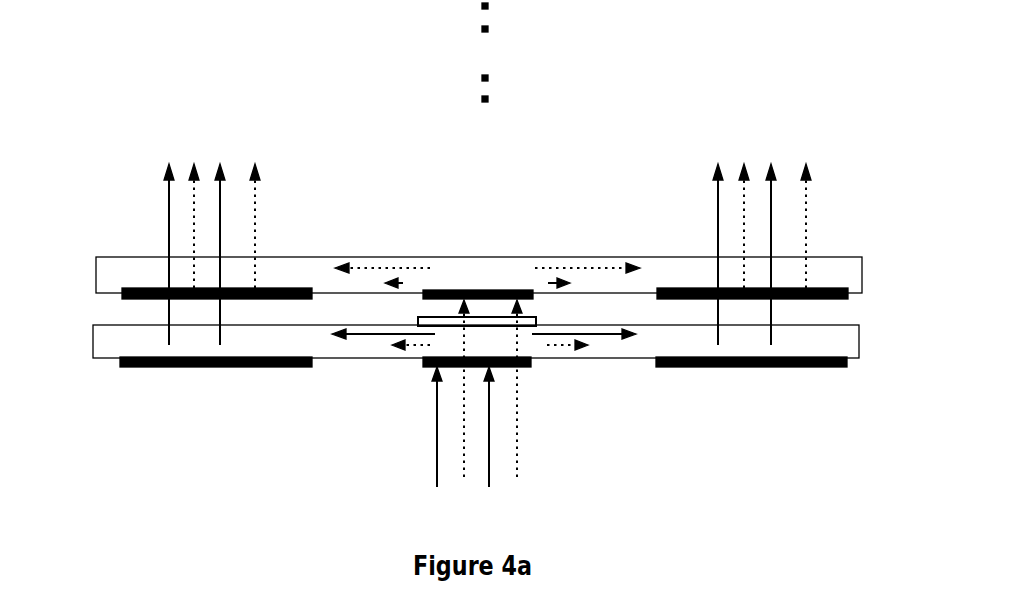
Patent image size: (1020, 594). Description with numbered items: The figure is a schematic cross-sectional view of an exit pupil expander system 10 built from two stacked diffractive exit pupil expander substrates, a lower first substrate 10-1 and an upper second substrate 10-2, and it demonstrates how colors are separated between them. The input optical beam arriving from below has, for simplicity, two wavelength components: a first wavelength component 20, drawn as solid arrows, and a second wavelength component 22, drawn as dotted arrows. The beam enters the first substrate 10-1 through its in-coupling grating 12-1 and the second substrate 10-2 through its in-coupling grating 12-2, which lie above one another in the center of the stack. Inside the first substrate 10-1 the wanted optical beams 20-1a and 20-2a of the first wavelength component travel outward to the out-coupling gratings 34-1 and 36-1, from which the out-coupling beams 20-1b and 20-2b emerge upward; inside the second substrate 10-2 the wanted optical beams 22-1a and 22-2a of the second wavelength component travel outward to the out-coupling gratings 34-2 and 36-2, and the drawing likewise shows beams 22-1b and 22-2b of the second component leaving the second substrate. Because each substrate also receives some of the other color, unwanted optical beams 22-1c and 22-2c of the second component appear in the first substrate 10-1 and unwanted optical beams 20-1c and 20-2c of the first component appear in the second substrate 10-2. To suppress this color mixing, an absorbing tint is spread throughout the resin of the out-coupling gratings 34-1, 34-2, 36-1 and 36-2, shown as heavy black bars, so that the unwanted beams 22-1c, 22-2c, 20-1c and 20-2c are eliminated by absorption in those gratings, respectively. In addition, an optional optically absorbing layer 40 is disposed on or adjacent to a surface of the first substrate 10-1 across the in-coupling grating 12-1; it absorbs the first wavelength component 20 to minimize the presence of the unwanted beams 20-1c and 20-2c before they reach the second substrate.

The exit pupil expander system 10 is at (540, 68).
The substrate 10-1 is at (110, 338).
The substrate 10-2 is at (113, 280).
The in-coupling grating 12-1 is at (522, 367).
The in-coupling grating 12-2 is at (487, 290).
The wavelength component 20 is at (435, 462).
The wavelength component 22 is at (517, 467).
The optical beam 20-1a is at (355, 334).
The optical beam 20-2a is at (610, 335).
The out-coupling beam 20-1b is at (163, 198).
The out-coupling beam 20-2b is at (717, 178).
The unwanted optical beam 20-1c is at (402, 282).
The unwanted optical beam 20-2c is at (571, 283).
The optical beam 22-1a is at (365, 266).
The optical beam 22-2a is at (572, 266).
The second fluid outlet flow, left 22-1b is at (257, 197).
The second fluid outlet flow, right 22-2b is at (803, 188).
The unwanted optical beam 22-1c is at (412, 342).
The unwanted optical beam 22-2c is at (553, 345).
The out-coupling grating 34-1 is at (210, 364).
The out-coupling grating 34-2 is at (157, 292).
The out-coupling grating 36-1 is at (758, 368).
The out-coupling grating 36-2 is at (822, 289).
The optically absorbing layer 40 is at (492, 317).